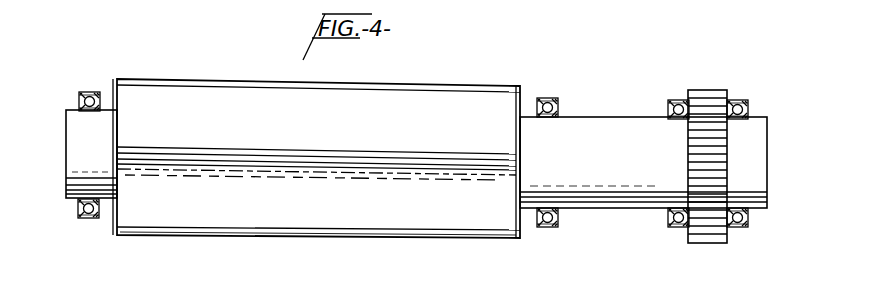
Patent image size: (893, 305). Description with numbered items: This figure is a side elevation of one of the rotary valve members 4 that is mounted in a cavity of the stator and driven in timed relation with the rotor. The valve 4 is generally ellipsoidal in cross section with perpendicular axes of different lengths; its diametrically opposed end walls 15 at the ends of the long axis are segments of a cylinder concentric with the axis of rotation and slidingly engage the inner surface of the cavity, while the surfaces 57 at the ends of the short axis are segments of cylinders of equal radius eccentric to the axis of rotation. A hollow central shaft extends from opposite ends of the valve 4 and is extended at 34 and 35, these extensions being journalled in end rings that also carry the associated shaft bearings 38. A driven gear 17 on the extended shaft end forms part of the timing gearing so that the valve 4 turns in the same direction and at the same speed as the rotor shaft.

The valve member 4 is at (191, 71).
The end wall 15 is at (245, 88).
The gear 17 is at (715, 98).
The shaft extension 34 is at (75, 142).
The shaft extension 35 is at (528, 144).
The shaft bearing 38 is at (90, 95).
The valve surface 57 is at (207, 205).